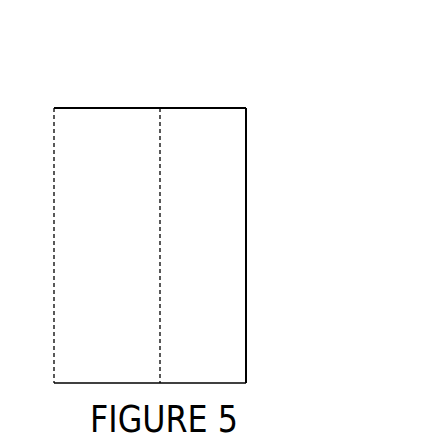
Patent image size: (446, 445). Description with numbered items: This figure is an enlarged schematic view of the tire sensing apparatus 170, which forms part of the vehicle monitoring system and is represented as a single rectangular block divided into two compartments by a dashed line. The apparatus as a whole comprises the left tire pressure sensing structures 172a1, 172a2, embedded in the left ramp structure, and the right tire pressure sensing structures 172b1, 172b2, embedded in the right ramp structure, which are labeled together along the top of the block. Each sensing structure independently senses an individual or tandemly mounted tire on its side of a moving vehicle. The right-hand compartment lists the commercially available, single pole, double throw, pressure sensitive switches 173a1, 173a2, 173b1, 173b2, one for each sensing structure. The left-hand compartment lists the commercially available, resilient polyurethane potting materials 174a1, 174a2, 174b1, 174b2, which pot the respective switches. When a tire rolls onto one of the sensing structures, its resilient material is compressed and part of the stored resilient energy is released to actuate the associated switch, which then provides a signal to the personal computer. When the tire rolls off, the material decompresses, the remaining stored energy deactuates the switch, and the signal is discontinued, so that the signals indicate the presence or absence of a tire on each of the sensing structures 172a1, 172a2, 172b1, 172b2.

The tire sensing apparatus 170 is at (152, 206).
The left tire pressure sensing structure 172a1 is at (152, 80).
The left tire pressure sensing structure 172a2 is at (152, 80).
The right tire pressure sensing structure 172b1 is at (152, 80).
The right tire pressure sensing structure 172b2 is at (120, 108).
The pressure sensitive switch 173a1 is at (203, 245).
The pressure sensitive switch 173a2 is at (203, 245).
The pressure sensitive switch 173b1 is at (203, 245).
The pressure sensitive switch 173b2 is at (203, 245).
The resilient polyurethane potting material 174a1 is at (107, 245).
The resilient polyurethane potting material 174a2 is at (107, 245).
The resilient polyurethane potting material 174b1 is at (107, 245).
The resilient polyurethane potting material 174b2 is at (107, 245).